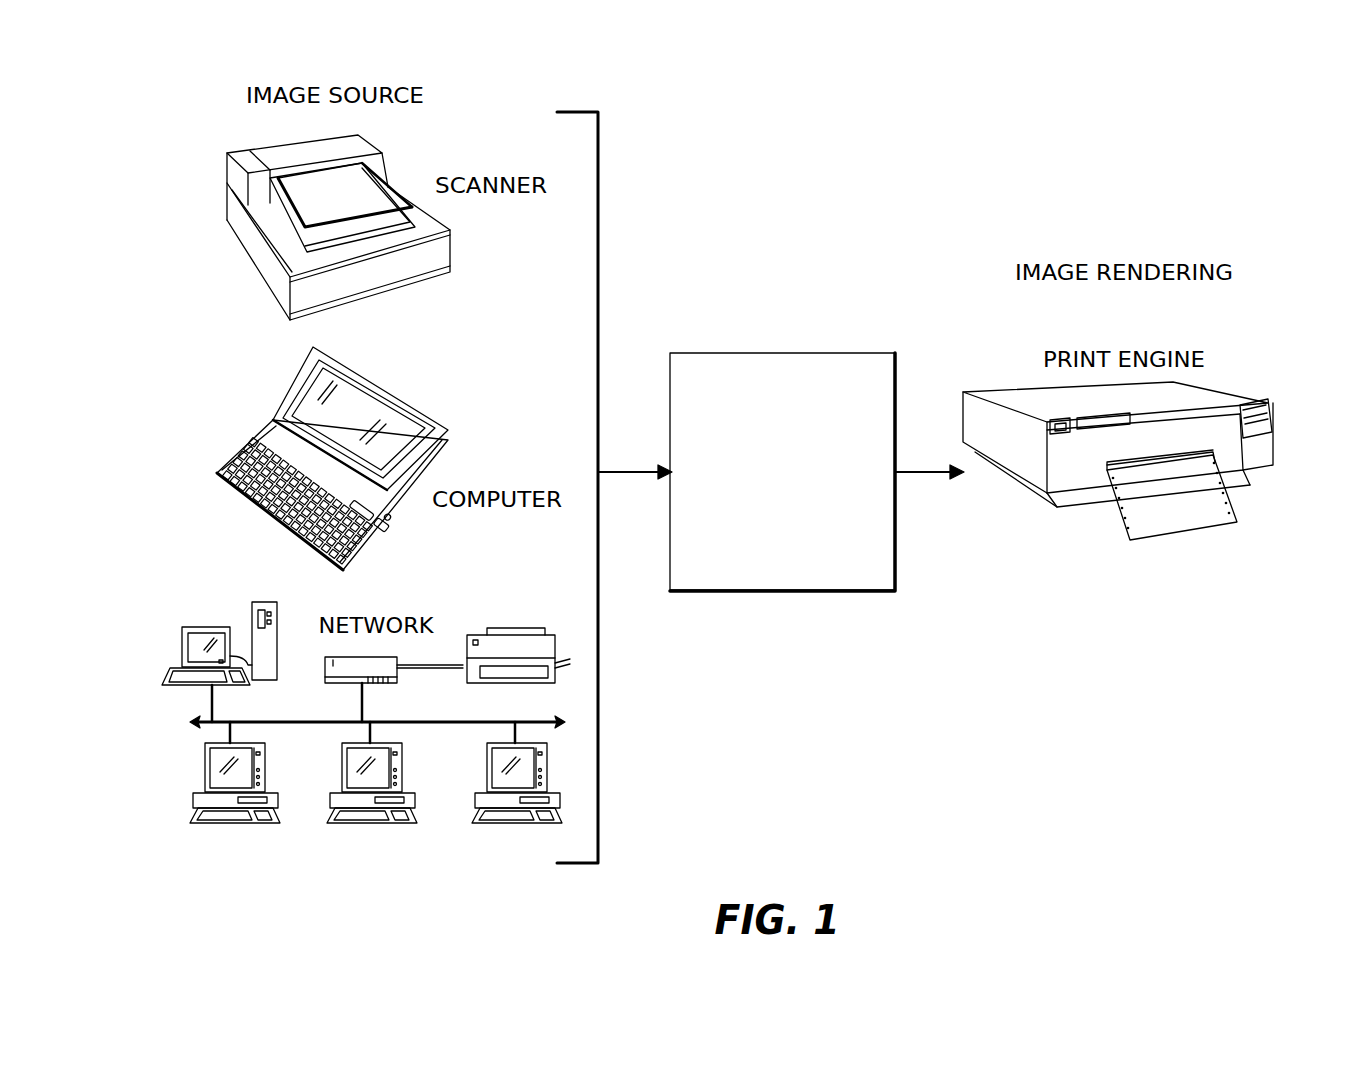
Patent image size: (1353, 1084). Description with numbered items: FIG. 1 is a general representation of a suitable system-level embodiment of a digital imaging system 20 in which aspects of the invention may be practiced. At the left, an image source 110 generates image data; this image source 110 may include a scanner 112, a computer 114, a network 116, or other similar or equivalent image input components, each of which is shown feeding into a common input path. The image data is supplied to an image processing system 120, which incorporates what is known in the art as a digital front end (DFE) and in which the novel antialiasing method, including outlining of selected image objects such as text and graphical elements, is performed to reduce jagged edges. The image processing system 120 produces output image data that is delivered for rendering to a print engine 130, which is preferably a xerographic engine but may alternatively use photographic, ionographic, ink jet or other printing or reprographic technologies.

The image processing system 20 is at (845, 158).
The image source 110 is at (474, 112).
The scanner 112 is at (412, 288).
The computer 114 is at (407, 405).
The network 116 is at (362, 836).
The image processing system 120 is at (772, 593).
The print engine 130 is at (1083, 507).